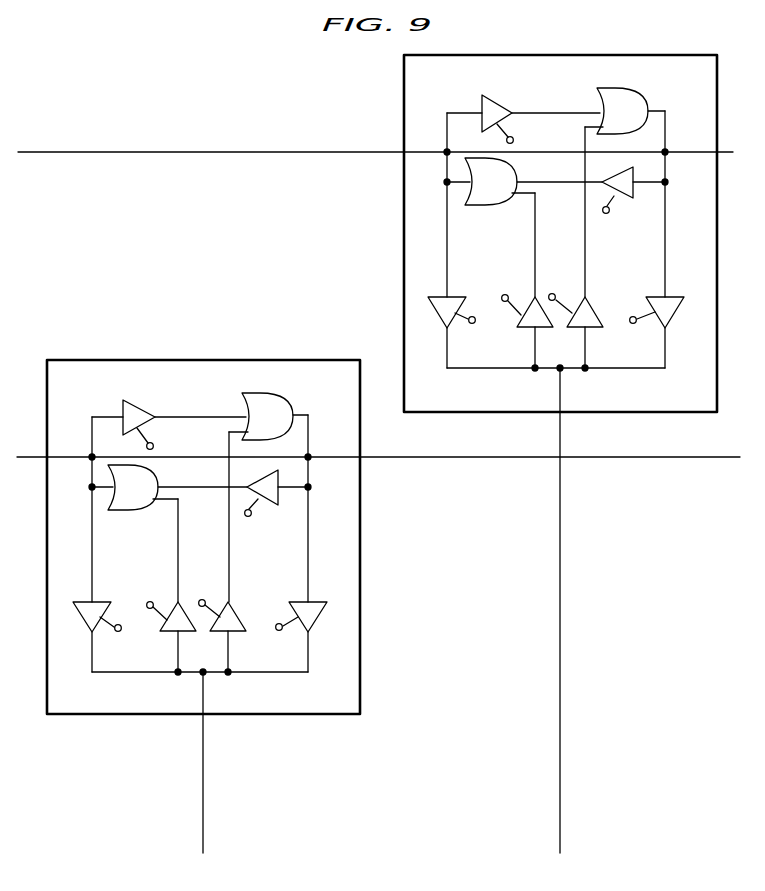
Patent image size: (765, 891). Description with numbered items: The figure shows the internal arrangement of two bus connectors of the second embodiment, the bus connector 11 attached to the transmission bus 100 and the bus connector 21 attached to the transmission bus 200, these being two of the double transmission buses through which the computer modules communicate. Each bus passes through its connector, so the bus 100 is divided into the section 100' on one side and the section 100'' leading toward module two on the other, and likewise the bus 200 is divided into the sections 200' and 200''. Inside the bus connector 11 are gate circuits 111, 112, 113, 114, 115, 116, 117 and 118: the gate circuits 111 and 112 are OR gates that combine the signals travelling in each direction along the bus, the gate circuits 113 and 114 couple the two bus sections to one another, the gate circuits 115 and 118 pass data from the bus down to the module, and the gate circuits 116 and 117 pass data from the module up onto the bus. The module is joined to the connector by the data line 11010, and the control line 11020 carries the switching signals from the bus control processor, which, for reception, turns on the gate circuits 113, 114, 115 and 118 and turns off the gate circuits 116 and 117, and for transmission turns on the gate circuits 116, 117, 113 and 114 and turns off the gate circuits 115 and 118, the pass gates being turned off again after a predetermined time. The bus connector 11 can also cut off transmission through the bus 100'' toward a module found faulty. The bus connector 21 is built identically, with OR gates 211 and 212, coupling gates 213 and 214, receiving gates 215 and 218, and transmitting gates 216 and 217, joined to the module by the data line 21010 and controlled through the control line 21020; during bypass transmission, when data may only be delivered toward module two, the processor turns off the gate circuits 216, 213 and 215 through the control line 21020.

The bus connector 11 is at (247, 359).
The bus connector 21 is at (404, 256).
The transmission bus 100 is at (375, 489).
The transmission bus section 100' is at (72, 509).
The transmission bus section 100'' is at (328, 508).
The transmission bus 200 is at (375, 174).
The transmission bus section 200' is at (429, 205).
The transmission bus section 200'' is at (687, 204).
The gate circuit 111 is at (290, 397).
The gate circuit 112 is at (138, 512).
The gate circuit 113 is at (150, 397).
The gate circuit 114 is at (260, 475).
The gate circuit 115 is at (80, 622).
The gate circuit 116 is at (170, 652).
The gate circuit 117 is at (238, 652).
The gate circuit 118 is at (318, 622).
The data line 11010 is at (204, 753).
The control line 11020 is at (256, 637).
The gate circuit 211 is at (651, 101).
The gate circuit 212 is at (489, 208).
The gate circuit 213 is at (512, 101).
The gate circuit 214 is at (620, 170).
The gate circuit 215 is at (438, 318).
The gate circuit 216 is at (526, 330).
The gate circuit 217 is at (592, 330).
The gate circuit 218 is at (673, 318).
The data line 21010 is at (560, 753).
The control line 21020 is at (612, 334).